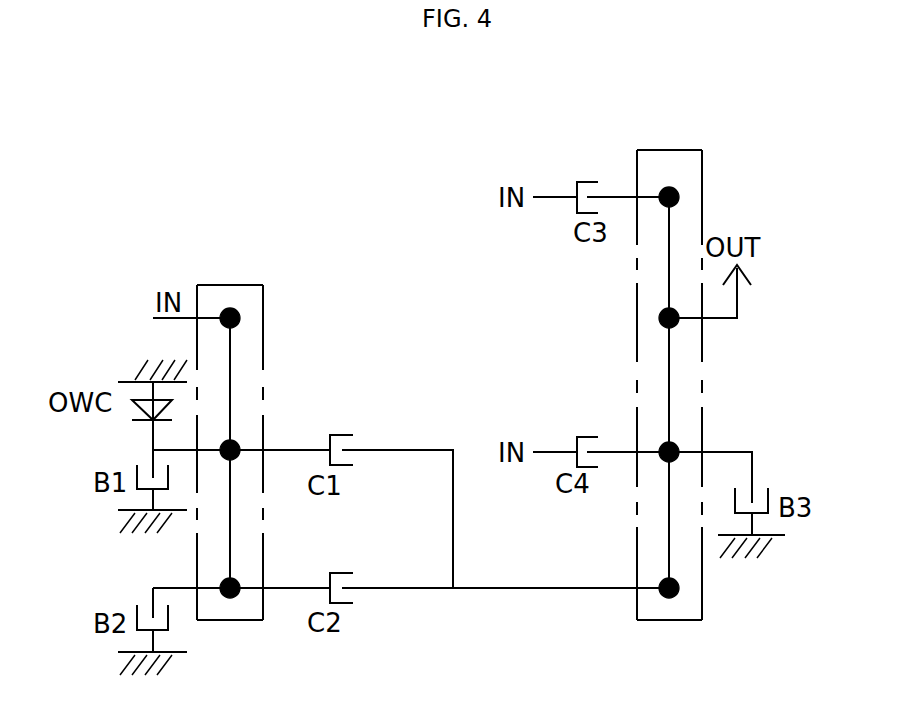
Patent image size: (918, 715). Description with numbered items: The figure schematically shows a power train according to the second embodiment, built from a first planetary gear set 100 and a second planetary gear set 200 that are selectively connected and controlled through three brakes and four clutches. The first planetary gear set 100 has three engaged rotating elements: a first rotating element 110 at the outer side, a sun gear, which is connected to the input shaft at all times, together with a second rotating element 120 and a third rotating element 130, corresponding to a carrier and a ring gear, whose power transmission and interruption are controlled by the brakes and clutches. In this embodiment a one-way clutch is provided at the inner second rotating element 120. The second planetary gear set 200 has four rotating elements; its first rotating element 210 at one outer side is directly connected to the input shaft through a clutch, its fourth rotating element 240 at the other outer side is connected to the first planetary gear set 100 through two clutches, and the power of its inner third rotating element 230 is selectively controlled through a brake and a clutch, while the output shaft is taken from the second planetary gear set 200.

The first planetary gear set 100 is at (225, 285).
The first rotating element 110 is at (240, 318).
The second rotating element 120 is at (237, 445).
The third rotating element 130 is at (230, 600).
The second planetary gear set 200 is at (669, 150).
The first rotating element 210 is at (660, 320).
The third rotating element 230 is at (677, 446).
The fourth rotating element 240 is at (670, 600).